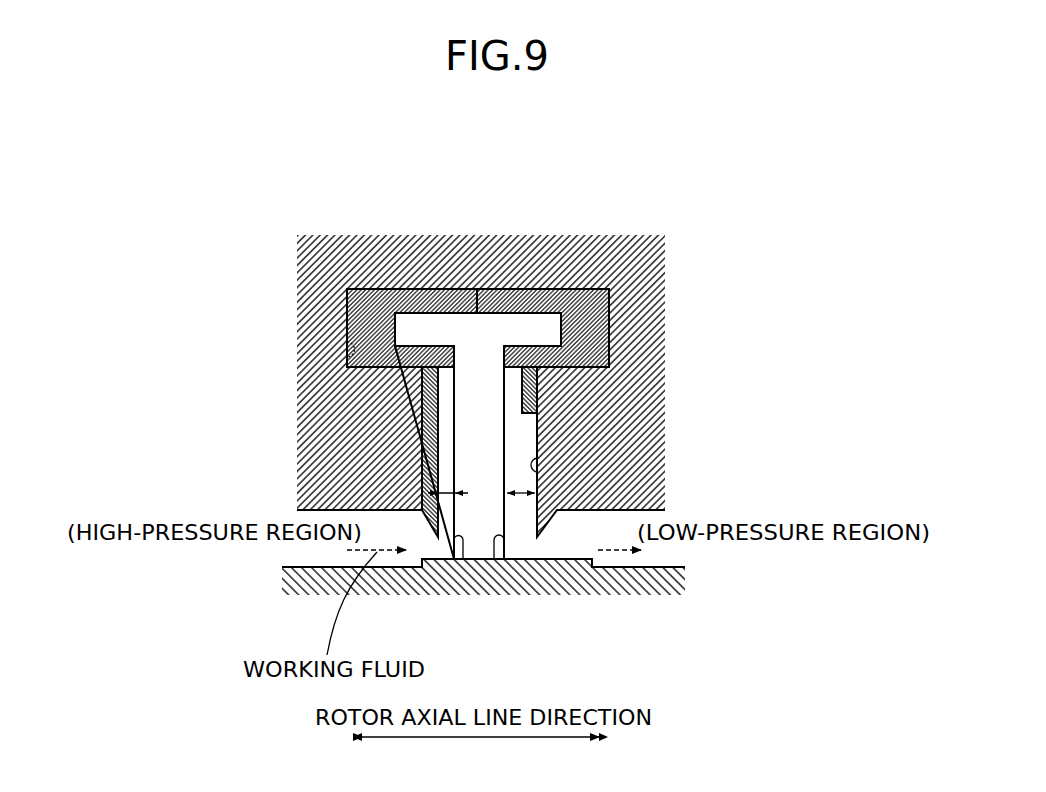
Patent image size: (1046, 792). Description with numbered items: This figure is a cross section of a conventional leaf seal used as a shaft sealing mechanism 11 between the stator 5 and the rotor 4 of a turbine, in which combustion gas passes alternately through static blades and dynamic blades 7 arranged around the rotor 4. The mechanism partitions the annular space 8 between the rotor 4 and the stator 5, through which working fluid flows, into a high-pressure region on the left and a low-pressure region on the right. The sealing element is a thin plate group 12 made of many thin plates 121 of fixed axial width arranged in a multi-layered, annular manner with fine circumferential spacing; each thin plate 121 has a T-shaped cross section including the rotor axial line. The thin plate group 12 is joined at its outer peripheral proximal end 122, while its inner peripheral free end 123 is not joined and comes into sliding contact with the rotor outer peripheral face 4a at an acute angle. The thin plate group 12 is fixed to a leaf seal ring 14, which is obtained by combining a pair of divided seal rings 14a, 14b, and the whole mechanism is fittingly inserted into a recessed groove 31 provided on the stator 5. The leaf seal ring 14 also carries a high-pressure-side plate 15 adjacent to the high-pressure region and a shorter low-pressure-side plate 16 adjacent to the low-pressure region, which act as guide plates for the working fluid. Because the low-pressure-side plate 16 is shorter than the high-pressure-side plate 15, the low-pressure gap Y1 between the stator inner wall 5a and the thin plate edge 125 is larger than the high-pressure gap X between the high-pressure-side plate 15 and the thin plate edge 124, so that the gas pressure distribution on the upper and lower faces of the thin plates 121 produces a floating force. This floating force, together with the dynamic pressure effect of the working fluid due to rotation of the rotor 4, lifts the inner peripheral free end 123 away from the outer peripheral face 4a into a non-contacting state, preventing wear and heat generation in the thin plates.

The rotor 4 is at (582, 582).
The rotor outer peripheral face 4a is at (537, 559).
The stator 5 is at (322, 250).
The stator inner wall 5a is at (538, 466).
The dynamic blade 7 is at (347, 324).
The annular space 8 is at (348, 557).
The shaft sealing mechanism 11 is at (694, 296).
The thin plate group 12 is at (485, 542).
The thin plate 121 is at (488, 520).
The outer peripheral proximal end 122 is at (520, 310).
The inner peripheral free end 123 is at (463, 560).
The thin plate edge 124 is at (453, 559).
The thin plate edge 125 is at (504, 559).
The leaf seal ring 14 is at (462, 297).
The divided seal ring 14a is at (380, 306).
The divided seal ring 14b is at (583, 307).
The high-pressure-side plate 15 is at (422, 449).
The low-pressure-side plate 16 is at (538, 394).
The recessed groove 31 is at (347, 357).
The high-pressure gap X is at (445, 488).
The low-pressure gap Y1 is at (515, 488).